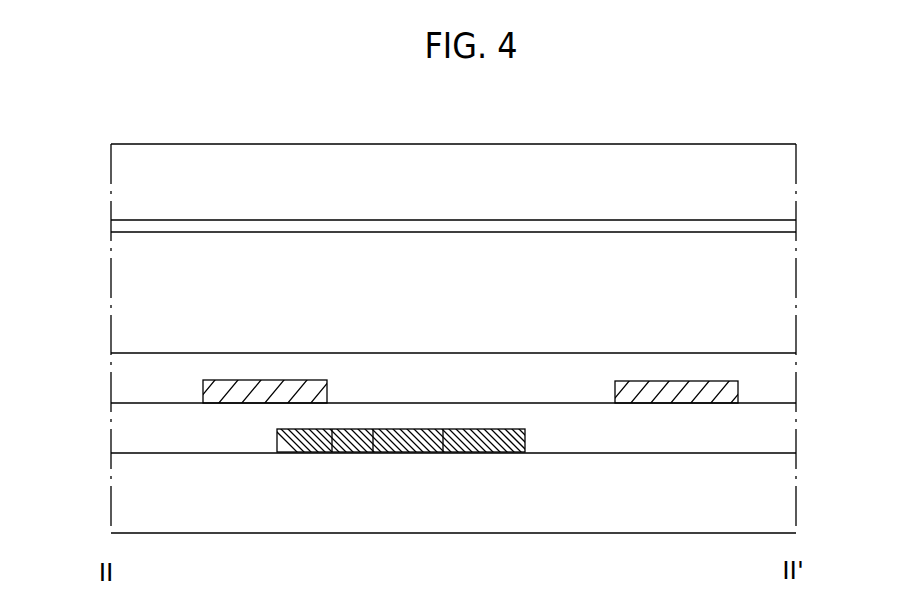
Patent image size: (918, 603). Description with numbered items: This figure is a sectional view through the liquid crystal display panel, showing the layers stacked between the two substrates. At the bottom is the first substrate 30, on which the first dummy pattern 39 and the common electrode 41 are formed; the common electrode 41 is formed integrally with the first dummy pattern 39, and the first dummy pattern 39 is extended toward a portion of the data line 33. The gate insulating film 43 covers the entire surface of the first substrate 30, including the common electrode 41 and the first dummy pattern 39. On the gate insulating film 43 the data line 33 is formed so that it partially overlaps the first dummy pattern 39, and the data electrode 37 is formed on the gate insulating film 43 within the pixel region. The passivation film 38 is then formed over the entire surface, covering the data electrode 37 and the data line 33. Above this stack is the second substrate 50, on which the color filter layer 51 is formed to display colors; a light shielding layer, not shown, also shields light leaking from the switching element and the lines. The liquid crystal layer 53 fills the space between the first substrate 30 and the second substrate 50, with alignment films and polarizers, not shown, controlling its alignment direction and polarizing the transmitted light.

The first substrate 30 is at (781, 488).
The data line 33 is at (215, 395).
The data electrode 37 is at (738, 393).
The passivation film 38 is at (781, 365).
The first dummy pattern 39 is at (332, 452).
The common electrode 41 is at (443, 452).
The gate insulating film 43 is at (781, 431).
The second substrate 50 is at (781, 184).
The color filter layer 51 is at (781, 228).
The liquid crystal layer 53 is at (781, 304).